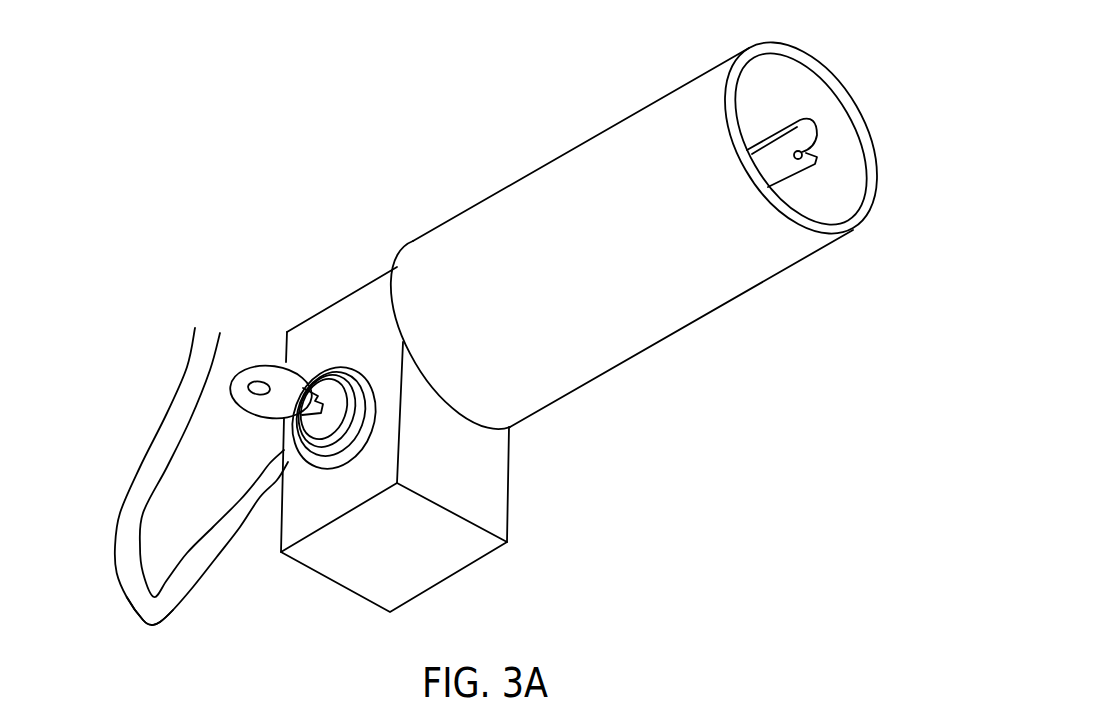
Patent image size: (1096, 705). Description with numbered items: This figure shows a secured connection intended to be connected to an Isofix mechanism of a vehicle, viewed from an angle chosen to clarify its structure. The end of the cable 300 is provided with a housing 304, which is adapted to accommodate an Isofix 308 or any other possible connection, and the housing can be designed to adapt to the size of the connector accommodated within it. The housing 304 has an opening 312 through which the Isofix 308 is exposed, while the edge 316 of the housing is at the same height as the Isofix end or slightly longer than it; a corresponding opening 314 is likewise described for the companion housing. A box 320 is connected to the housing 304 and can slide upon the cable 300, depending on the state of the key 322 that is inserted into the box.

The cable 300 is at (187, 372).
The housing 304 is at (550, 187).
The Isofix 308 is at (778, 168).
The opening 312 is at (835, 195).
The opening 314 is at (243, 704).
The edge 316 is at (838, 73).
The box 320 is at (483, 473).
The key 322 is at (268, 360).